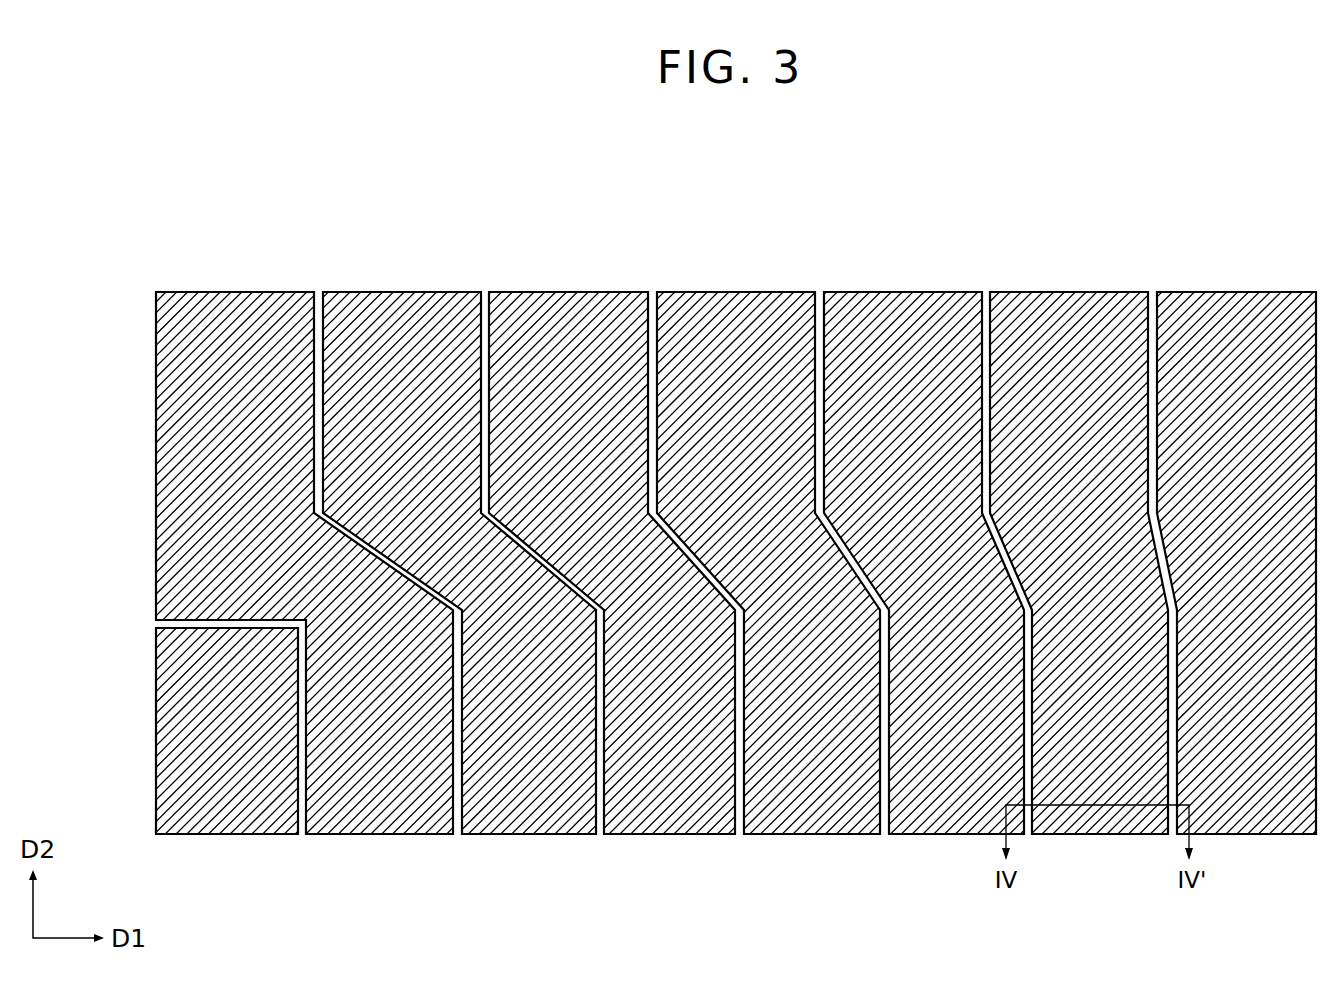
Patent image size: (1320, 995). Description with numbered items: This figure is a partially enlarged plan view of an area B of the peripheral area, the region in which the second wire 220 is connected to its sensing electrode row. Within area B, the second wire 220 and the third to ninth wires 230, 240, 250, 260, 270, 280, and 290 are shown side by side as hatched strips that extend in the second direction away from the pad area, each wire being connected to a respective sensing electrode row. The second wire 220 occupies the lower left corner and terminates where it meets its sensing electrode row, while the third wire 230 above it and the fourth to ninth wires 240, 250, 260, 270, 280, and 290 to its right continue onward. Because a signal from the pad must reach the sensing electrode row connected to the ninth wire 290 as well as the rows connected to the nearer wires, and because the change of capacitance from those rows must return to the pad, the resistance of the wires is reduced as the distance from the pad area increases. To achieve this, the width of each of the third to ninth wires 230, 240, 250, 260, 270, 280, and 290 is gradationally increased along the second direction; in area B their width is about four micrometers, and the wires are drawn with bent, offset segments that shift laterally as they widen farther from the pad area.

The area B is at (821, 228).
The second wire 220 is at (225, 834).
The third wire 230 is at (235, 291).
The fourth wire 240 is at (400, 291).
The fifth wire 250 is at (567, 291).
The sixth wire 260 is at (735, 291).
The seventh wire 270 is at (900, 291).
The eighth wire 280 is at (1068, 291).
The ninth wire 290 is at (1235, 291).